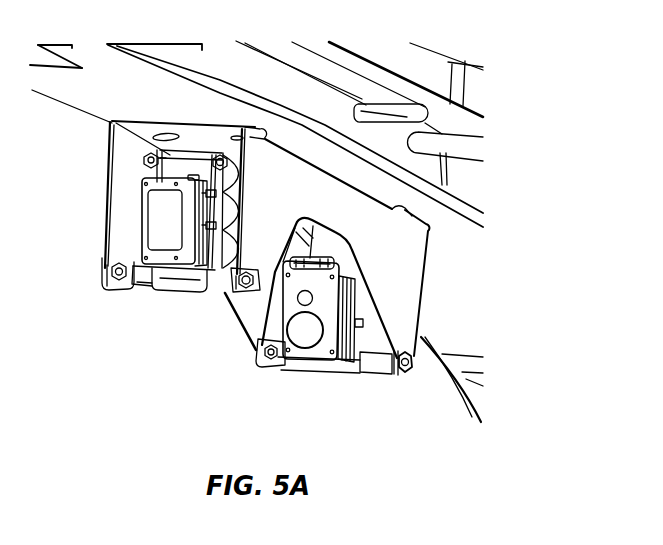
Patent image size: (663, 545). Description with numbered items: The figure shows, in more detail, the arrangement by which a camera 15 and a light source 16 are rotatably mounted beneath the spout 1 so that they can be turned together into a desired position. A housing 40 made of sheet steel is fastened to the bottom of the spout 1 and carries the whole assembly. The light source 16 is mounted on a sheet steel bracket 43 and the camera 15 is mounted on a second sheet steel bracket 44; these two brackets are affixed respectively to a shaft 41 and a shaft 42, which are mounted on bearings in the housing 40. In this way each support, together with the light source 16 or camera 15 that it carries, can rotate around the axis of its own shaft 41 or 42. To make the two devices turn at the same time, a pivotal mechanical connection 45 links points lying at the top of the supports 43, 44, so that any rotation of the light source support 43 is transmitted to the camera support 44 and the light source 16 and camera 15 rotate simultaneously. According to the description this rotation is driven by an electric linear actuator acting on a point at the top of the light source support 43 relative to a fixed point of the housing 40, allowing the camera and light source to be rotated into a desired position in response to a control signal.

The spout 1 is at (92, 93).
The camera 15 is at (306, 336).
The light source 16 is at (160, 222).
The housing 40 is at (253, 318).
The shaft 41 is at (140, 290).
The shaft 42 is at (371, 364).
The sheet steel bracket 43 is at (188, 272).
The sheet steel bracket 44 is at (342, 364).
The pivotal mechanical connection 45 is at (233, 163).